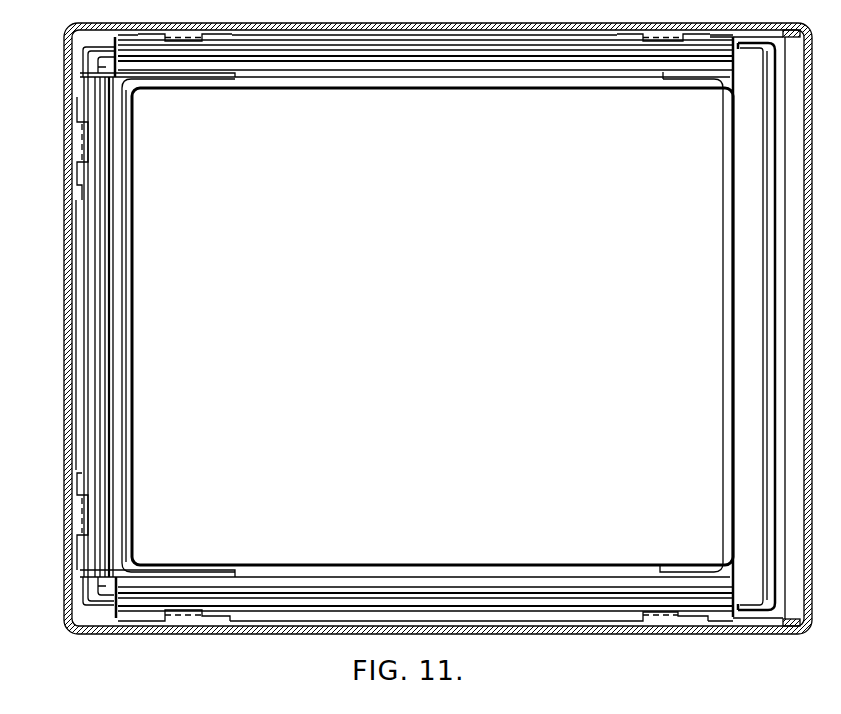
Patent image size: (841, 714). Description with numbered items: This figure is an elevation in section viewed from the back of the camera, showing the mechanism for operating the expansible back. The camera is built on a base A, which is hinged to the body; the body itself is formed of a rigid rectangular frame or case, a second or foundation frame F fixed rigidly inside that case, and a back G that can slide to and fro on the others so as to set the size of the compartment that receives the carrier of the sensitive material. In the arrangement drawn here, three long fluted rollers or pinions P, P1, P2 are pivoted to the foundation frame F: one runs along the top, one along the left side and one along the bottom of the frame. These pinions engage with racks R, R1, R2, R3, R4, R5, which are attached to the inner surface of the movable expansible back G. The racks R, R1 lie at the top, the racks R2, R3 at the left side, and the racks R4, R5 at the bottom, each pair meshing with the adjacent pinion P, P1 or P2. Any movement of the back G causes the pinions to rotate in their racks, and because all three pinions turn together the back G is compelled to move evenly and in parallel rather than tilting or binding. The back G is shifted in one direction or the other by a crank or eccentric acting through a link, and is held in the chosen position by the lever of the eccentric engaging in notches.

The base A is at (447, 328).
The foundation frame F is at (427, 327).
The back G is at (57, 335).
The fluted roller or pinion P is at (407, 50).
The fluted roller or pinion P1 is at (98, 327).
The fluted roller or pinion P2 is at (417, 597).
The rack R is at (663, 20).
The rack R1 is at (207, 2).
The rack R2 is at (58, 148).
The rack R3 is at (58, 521).
The rack R4 is at (184, 639).
The rack R5 is at (662, 639).